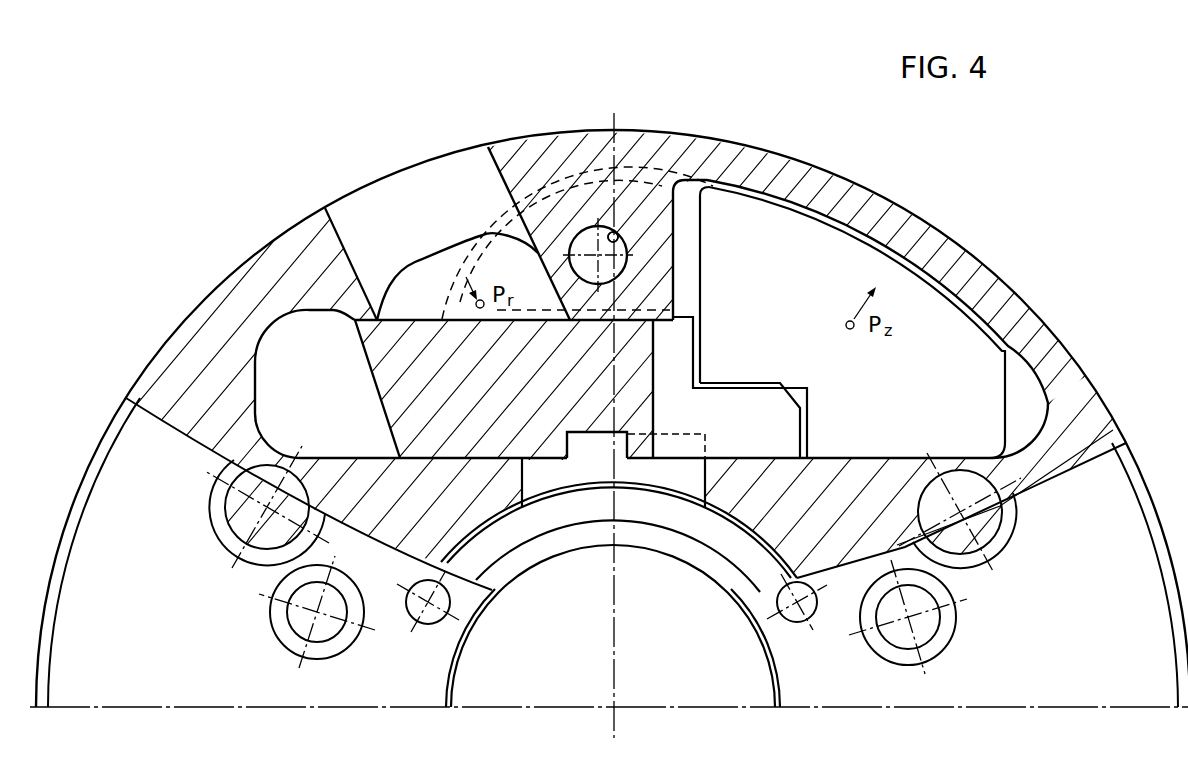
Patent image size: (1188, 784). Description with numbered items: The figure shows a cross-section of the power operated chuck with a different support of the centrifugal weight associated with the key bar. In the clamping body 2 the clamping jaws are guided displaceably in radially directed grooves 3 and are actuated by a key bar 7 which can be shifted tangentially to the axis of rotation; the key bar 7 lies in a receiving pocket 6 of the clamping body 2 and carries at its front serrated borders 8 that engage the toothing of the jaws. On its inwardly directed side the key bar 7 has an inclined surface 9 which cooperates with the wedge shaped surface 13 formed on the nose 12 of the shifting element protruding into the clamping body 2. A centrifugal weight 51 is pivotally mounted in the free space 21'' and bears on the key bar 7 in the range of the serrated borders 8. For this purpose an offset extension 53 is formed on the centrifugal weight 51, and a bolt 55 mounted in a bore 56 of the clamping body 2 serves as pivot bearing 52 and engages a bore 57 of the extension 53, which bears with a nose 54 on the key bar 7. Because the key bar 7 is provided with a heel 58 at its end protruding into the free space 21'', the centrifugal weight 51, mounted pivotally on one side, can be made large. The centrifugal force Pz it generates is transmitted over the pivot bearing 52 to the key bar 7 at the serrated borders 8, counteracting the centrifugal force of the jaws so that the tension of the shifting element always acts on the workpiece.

The clamping body 2 is at (291, 222).
The radially directed grooves 3 is at (492, 172).
The receiving pockets 6 is at (372, 452).
The key bar 7 is at (370, 395).
The serrated borders 8 is at (376, 388).
The inclined surface 9 is at (688, 445).
The nose 12 is at (693, 477).
The wedge shaped surface 13 is at (587, 447).
The free space 21'' is at (712, 219).
The centrifugal weight 51 is at (776, 199).
The pivot bearing 52 is at (645, 275).
The offset extension 53 is at (593, 184).
The nose 54 is at (414, 385).
The bolt 55 is at (538, 193).
The bore 56 is at (618, 238).
The bore 57 is at (613, 237).
The heel 58 is at (762, 386).